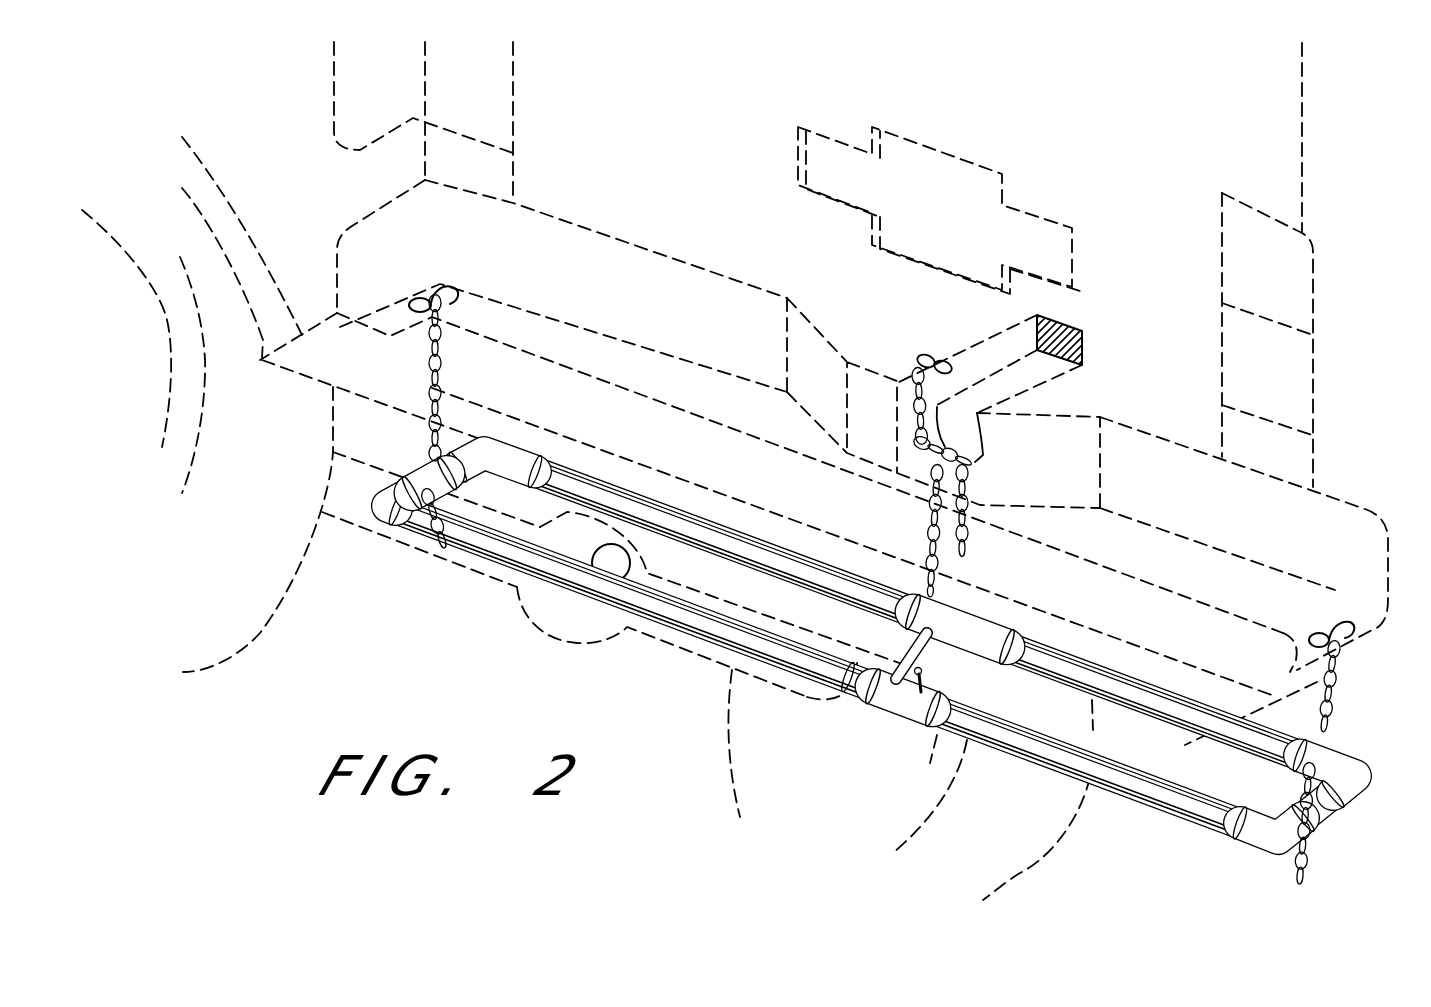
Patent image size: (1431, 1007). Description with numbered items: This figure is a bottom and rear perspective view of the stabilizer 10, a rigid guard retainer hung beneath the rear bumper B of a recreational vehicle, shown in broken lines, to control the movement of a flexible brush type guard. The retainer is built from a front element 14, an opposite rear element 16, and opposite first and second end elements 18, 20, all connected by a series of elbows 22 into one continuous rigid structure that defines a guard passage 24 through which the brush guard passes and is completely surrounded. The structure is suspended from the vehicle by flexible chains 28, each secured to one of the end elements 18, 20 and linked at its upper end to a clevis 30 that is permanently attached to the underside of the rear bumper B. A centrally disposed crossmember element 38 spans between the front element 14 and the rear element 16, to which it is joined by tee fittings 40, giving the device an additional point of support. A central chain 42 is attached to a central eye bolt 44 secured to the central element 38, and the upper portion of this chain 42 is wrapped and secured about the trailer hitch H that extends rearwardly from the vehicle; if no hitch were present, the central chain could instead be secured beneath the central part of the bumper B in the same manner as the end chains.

The stabilizer 10 is at (870, 557).
The front element 14 is at (683, 633).
The rear element 16 is at (700, 523).
The first end element 18 is at (413, 477).
The second end element 20 is at (1317, 820).
The elbows 22 is at (507, 447).
The guard passage 24 is at (1153, 762).
The chains 28 is at (442, 380).
The clevis 30 is at (437, 290).
The central crossmember element 38 is at (903, 657).
The tee fittings 40 is at (985, 608).
The central chain 42 is at (927, 517).
The central eye bolt 44 is at (923, 686).
The rear bumper B is at (645, 237).
The trailer hitch H is at (1093, 350).